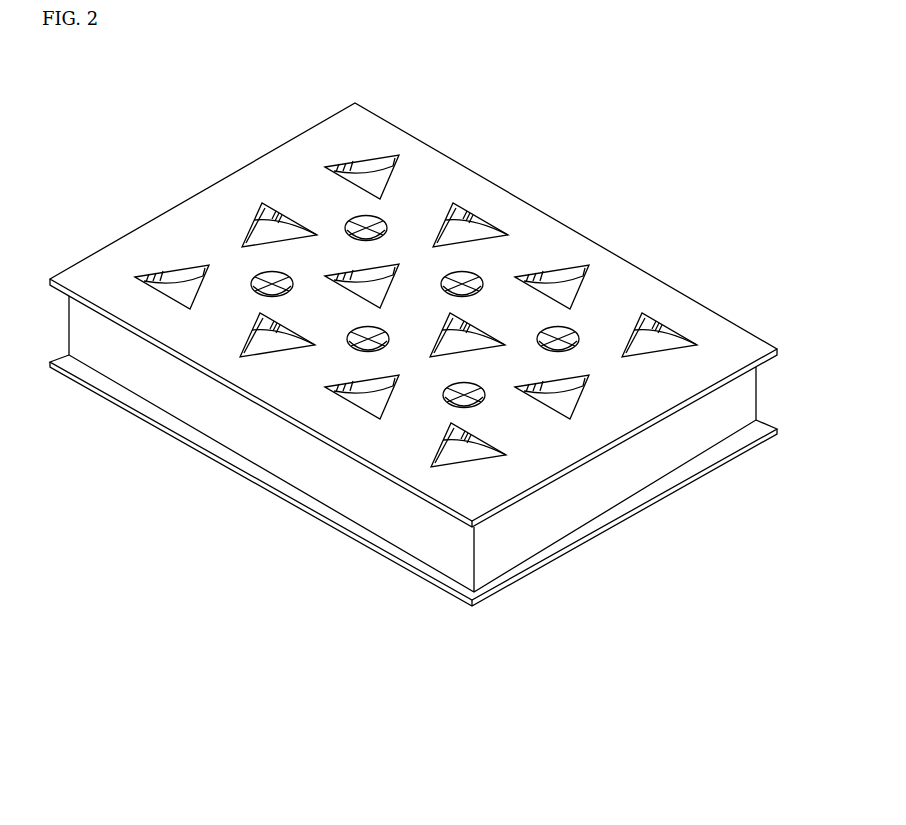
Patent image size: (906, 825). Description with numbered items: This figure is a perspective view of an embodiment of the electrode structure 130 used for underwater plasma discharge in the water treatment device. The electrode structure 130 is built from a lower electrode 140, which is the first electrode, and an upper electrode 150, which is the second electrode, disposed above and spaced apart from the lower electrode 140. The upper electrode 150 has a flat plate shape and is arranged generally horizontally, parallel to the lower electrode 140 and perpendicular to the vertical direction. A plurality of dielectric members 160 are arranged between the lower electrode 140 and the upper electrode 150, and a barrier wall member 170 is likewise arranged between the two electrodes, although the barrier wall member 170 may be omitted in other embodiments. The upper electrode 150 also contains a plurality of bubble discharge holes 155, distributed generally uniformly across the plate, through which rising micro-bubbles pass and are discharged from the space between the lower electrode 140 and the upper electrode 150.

The electrode structure 130 is at (413, 382).
The lower electrode 140 is at (457, 582).
The upper electrode 150 is at (620, 272).
The bubble discharge holes 155 is at (270, 277).
The dielectric members 160 is at (370, 170).
The barrier wall member 170 is at (650, 478).